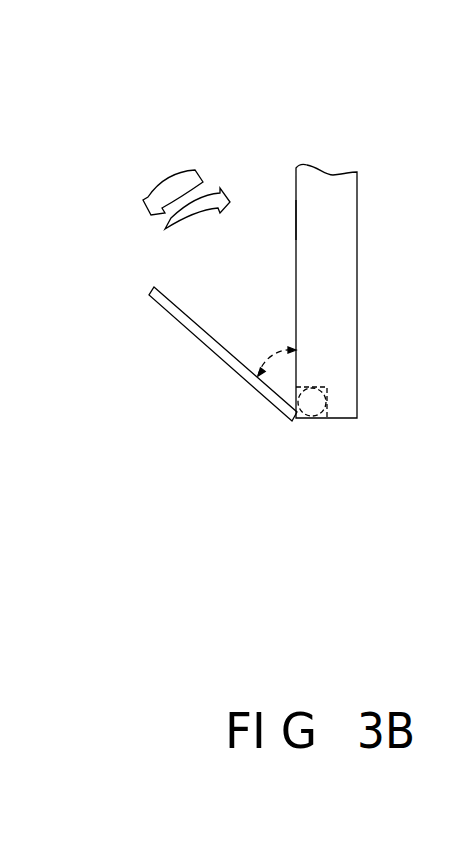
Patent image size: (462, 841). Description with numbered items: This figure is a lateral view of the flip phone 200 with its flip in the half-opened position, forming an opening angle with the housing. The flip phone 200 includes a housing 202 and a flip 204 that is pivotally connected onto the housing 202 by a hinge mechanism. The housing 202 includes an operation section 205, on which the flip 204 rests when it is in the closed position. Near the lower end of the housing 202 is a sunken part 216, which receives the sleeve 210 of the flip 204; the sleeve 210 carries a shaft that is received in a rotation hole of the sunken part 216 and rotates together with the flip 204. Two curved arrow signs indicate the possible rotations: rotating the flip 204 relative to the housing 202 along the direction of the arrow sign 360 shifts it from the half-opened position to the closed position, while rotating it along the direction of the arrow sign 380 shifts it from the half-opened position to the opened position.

The flip phone 200 is at (427, 99).
The housing 202 is at (343, 202).
The flip 204 is at (183, 320).
The operation section 205 is at (296, 222).
The sleeve 210 is at (313, 417).
The sunken part 216 is at (327, 402).
The arrow sign 360 is at (197, 215).
The arrow sign 380 is at (165, 188).